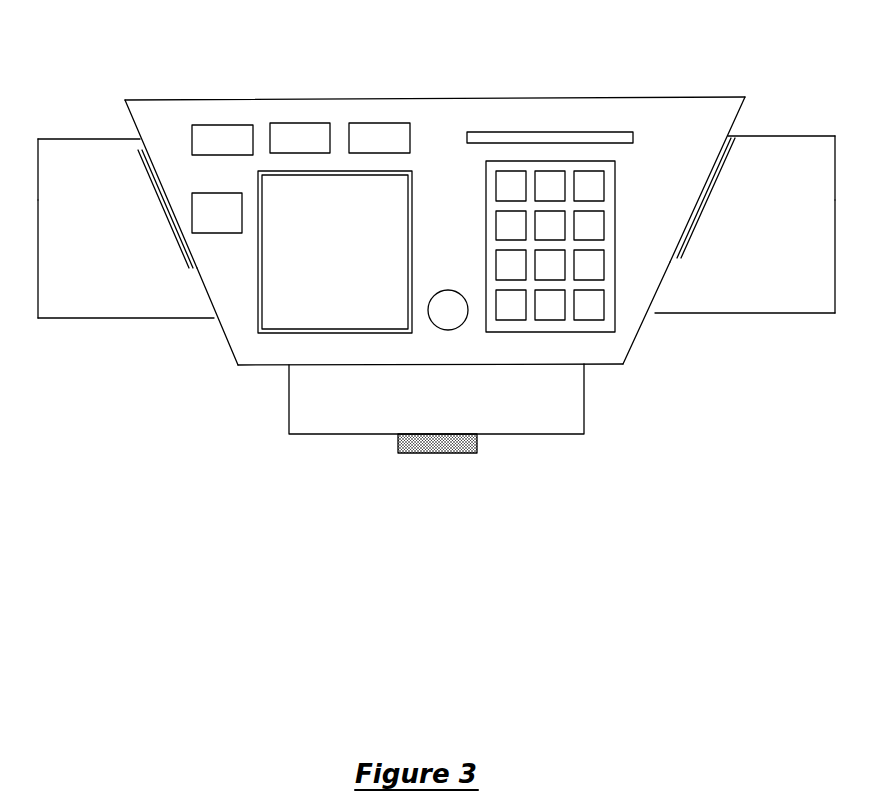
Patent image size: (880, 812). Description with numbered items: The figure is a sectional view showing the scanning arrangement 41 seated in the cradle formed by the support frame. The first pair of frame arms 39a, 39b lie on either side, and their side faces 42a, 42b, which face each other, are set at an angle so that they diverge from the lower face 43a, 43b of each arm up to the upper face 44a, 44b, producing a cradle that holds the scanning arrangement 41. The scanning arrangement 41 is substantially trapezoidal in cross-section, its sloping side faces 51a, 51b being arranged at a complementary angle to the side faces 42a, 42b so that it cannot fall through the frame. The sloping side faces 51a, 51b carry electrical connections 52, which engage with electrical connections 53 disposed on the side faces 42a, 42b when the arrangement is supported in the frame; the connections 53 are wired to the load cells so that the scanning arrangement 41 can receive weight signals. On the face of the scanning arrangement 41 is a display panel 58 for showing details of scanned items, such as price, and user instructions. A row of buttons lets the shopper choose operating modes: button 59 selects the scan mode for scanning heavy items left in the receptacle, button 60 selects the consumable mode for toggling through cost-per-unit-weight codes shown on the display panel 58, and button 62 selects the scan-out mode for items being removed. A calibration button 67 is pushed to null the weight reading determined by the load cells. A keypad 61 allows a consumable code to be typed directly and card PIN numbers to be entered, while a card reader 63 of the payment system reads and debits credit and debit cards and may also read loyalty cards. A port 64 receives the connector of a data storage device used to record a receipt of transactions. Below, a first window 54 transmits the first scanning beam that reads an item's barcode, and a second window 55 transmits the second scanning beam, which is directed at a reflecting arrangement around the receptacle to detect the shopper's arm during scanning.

The scanning arrangement 41 is at (437, 110).
The sloping side face 51a is at (136, 120).
The sloping side face 51b is at (735, 117).
The electrical connections 52 is at (148, 157).
The electrical connections 53 is at (143, 176).
The upper face 44a is at (75, 139).
The upper face 44b is at (775, 136).
The frame arm 39b is at (80, 312).
The frame arm 39a is at (826, 310).
The lower face 43a is at (95, 318).
The lower face 43b is at (778, 313).
The side face 42a is at (198, 288).
The side face 42b is at (670, 282).
The button 59 is at (208, 151).
The button 60 is at (288, 150).
The button 62 is at (367, 150).
The calibration button 67 is at (205, 225).
The display panel 58 is at (303, 254).
The card reader 63 is at (544, 132).
The port 64 is at (448, 305).
The keypad 61 is at (603, 327).
The second window 55 is at (557, 420).
The first window 54 is at (437, 446).